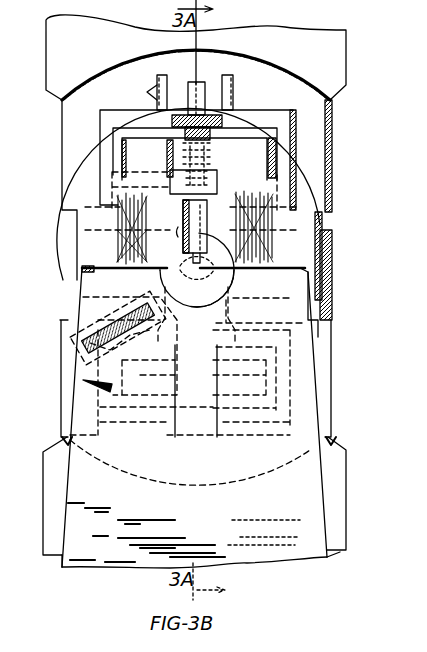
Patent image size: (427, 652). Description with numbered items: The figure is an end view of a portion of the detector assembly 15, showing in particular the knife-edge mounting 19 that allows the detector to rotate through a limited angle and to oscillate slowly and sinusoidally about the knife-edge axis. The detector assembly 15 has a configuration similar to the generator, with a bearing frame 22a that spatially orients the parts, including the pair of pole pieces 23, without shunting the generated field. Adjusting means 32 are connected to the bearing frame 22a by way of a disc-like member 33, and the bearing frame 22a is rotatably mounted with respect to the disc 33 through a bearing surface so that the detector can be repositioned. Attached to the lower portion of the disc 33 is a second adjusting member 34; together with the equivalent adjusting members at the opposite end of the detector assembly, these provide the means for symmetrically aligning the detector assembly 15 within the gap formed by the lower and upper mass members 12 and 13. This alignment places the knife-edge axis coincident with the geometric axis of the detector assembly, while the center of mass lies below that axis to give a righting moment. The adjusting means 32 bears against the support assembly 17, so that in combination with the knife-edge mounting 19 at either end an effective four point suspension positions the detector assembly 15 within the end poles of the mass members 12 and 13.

The lower mass member 12 is at (336, 57).
The upper mass member 13 is at (338, 488).
The detector assembly 15 is at (74, 149).
The support assembly 17 is at (83, 505).
The knife-edge mounting 19 is at (205, 258).
The bearing frame 22a is at (313, 385).
The pole pieces 23 is at (320, 138).
The adjusting means 32 is at (220, 110).
The disc-like member 33 is at (298, 236).
The second adjusting member 34 is at (83, 340).